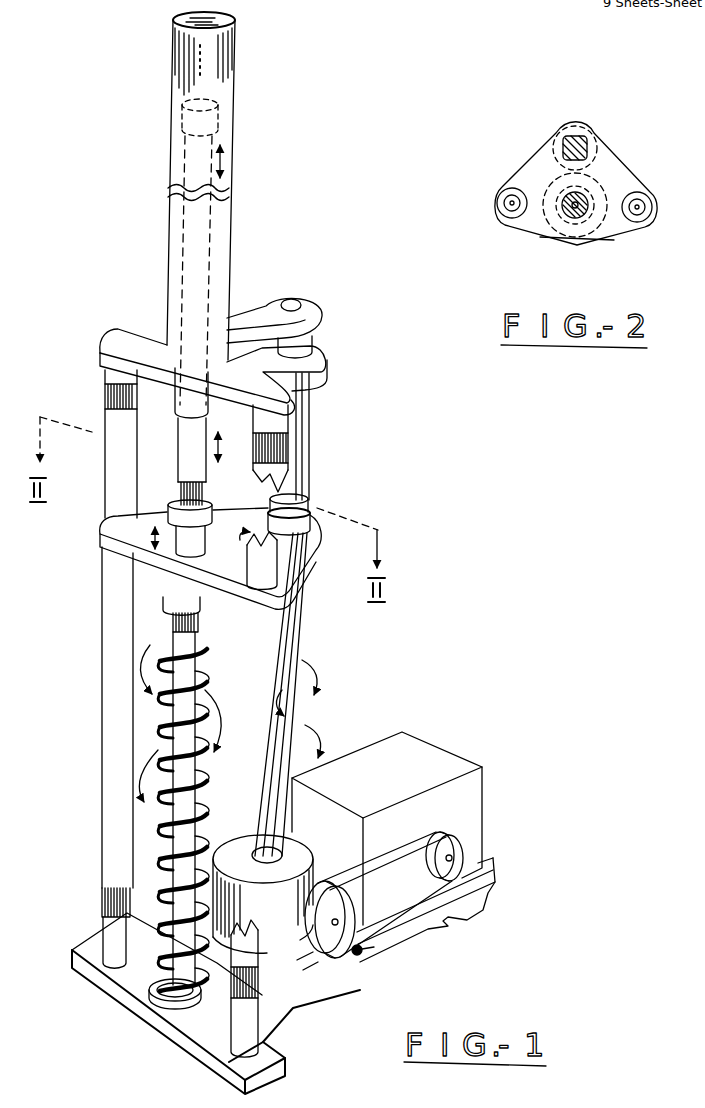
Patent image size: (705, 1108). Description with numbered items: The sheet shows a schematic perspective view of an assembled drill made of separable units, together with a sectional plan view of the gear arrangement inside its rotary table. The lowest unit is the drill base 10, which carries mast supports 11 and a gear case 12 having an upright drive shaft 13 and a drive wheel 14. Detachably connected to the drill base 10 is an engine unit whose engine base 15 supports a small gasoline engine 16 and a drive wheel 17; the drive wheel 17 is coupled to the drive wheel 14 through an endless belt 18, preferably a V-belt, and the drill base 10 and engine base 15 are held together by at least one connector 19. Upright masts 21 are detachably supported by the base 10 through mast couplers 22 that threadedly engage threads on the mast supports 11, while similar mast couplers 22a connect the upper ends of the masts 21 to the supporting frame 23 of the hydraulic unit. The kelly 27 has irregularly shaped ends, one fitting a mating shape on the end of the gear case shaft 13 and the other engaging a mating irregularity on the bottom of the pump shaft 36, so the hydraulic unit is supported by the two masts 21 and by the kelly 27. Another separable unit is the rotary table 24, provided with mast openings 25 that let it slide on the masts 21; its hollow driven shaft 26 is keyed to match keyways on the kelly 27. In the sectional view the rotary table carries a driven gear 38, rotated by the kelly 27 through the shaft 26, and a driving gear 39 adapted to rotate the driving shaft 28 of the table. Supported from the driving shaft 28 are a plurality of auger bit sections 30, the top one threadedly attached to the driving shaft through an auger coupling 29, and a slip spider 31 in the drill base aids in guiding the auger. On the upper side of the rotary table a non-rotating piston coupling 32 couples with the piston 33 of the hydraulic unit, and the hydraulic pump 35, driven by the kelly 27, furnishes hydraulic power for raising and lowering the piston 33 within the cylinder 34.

In FIG. 1, the drill base 10 is at (298, 1005).
In FIG. 1, the mast supports 11 is at (103, 927).
In FIG. 1, the gear case 12 is at (306, 849).
In FIG. 1, the upright drive shaft 13 is at (287, 842).
In FIG. 1, the drive wheel 14 is at (333, 950).
In FIG. 1, the engine base 15 is at (424, 912).
In FIG. 1, the gasoline engine 16 is at (453, 758).
In FIG. 1, the drive wheel 17 is at (454, 858).
In FIG. 1, the endless belt 18 is at (428, 838).
In FIG. 1, the connector 19 is at (368, 950).
In FIG. 1, the upright masts 21 is at (102, 800).
In FIG. 2, the upright masts 21 is at (646, 207).
In FIG. 1, the mast couplers 22 is at (102, 895).
In FIG. 1, the mast couplers 22a is at (107, 388).
In FIG. 1, the supporting frame 23 is at (110, 331).
In FIG. 1, the rotary table 24 is at (324, 540).
In FIG. 1, the mast openings 25 is at (103, 525).
In FIG. 2, the mast openings 25 is at (640, 196).
In FIG. 1, the driven shaft 26 is at (305, 512).
In FIG. 2, the driven shaft 26 is at (566, 136).
In FIG. 1, the kelly 27 is at (302, 606).
In FIG. 2, the kelly 27 is at (580, 140).
In FIG. 1, the driving shaft 28 is at (198, 599).
In FIG. 2, the driving shaft 28 is at (562, 213).
In FIG. 1, the auger coupling 29 is at (173, 625).
In FIG. 1, the auger bit sections 30 is at (207, 772).
In FIG. 1, the slip spider 31 is at (150, 1008).
In FIG. 1, the piston coupling 32 is at (206, 494).
In FIG. 1, the piston 33 is at (176, 252).
In FIG. 1, the cylinder 34 is at (232, 212).
In FIG. 1, the hydraulic pump 35 is at (318, 307).
In FIG. 1, the pump shaft 36 is at (311, 400).
In FIG. 2, the driven gear 38 is at (598, 158).
In FIG. 2, the driving gear 39 is at (604, 228).